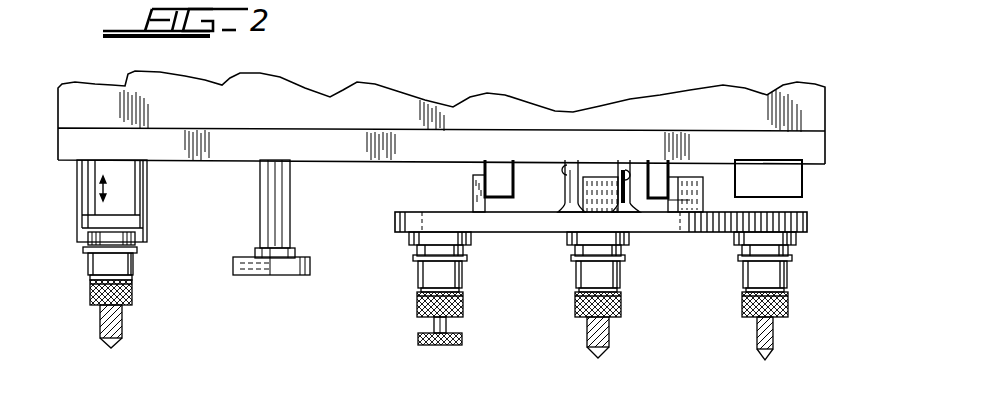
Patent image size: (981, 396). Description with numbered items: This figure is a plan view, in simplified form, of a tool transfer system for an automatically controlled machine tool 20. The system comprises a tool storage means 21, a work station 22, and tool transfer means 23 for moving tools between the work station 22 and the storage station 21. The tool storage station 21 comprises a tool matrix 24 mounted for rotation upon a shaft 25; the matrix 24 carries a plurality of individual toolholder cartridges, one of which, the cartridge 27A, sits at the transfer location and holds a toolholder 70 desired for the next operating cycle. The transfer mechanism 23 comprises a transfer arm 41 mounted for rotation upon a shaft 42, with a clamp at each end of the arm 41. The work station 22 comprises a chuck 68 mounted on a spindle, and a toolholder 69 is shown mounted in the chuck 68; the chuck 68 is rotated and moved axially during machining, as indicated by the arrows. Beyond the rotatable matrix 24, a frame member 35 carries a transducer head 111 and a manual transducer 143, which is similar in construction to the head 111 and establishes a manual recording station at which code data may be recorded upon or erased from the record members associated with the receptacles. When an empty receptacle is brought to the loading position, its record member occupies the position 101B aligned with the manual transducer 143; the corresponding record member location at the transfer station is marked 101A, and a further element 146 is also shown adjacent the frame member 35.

The machine tool 20 is at (505, 115).
The frame member 35 is at (704, 145).
The chuck 68 is at (143, 212).
The work station 22 is at (144, 303).
The toolholder 69 is at (94, 306).
The shaft 42 is at (285, 204).
The tool transfer means 23 is at (271, 285).
The transfer arm 41 is at (310, 256).
The contact bar 101A is at (473, 185).
The transducer head 111 is at (513, 188).
The shaft 25 is at (567, 168).
The manual transducer 143 is at (651, 180).
The block 146 is at (768, 182).
The record member position 101B is at (703, 206).
The tool matrix 24 is at (662, 228).
The cartridge 27A is at (470, 246).
The toolholder 70 is at (418, 303).
The tool storage means 21 is at (548, 341).